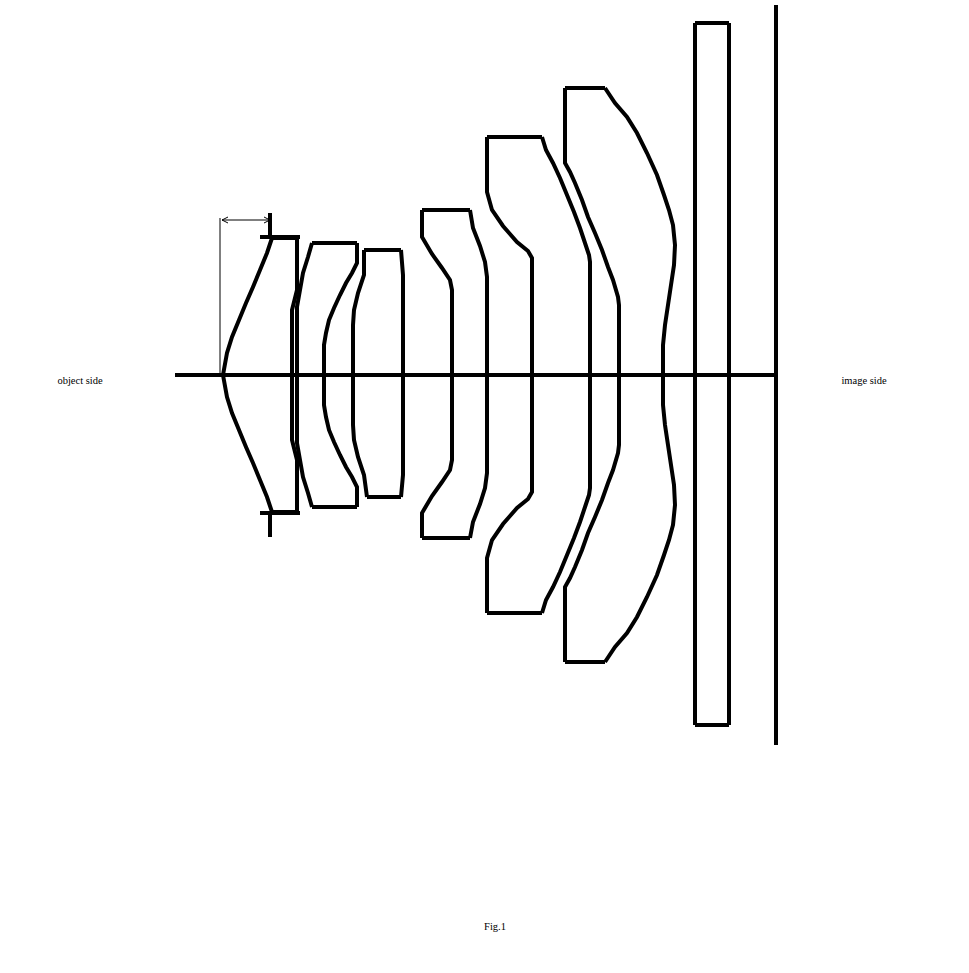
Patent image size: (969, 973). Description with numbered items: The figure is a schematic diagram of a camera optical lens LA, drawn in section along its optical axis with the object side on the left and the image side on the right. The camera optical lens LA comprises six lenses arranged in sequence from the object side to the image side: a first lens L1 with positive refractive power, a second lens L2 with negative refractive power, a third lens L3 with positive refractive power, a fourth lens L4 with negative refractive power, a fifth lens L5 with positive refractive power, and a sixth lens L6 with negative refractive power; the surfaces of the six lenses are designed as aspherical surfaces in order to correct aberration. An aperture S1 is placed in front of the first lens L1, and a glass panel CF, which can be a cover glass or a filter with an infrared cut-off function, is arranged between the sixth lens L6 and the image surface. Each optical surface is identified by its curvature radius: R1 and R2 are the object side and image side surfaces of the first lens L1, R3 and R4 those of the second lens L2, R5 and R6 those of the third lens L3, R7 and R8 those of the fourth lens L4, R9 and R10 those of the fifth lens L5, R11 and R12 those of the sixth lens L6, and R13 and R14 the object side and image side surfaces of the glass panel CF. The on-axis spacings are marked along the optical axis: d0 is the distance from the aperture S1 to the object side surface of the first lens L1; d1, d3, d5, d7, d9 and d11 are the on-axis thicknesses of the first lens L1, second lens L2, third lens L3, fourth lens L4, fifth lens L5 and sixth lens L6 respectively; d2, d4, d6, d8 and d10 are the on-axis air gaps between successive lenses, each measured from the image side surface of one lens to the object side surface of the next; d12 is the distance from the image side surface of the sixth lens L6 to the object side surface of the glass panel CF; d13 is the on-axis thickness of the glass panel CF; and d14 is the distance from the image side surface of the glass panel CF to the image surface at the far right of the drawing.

The camera optical lens LA is at (251, 83).
The aperture S1 is at (268, 210).
The first lens L1 is at (226, 375).
The second lens L2 is at (298, 412).
The third lens L3 is at (360, 443).
The fourth lens L4 is at (435, 459).
The fifth lens L5 is at (523, 436).
The sixth lens L6 is at (604, 435).
The glass panel CF is at (686, 414).
The object side surface of the first lens R1 is at (222, 379).
The image side surface of the first lens R2 is at (291, 385).
The object side surface of the second lens R3 is at (293, 412).
The image side surface of the second lens R4 is at (322, 411).
The object side surface of the third lens R5 is at (354, 415).
The image side surface of the third lens R6 is at (401, 416).
The object side surface of the fourth lens R7 is at (450, 408).
The image side surface of the fourth lens R8 is at (487, 402).
The object side surface of the fifth lens R9 is at (530, 408).
The image side surface of the fifth lens R10 is at (588, 412).
The object side surface of the sixth lens R11 is at (616, 455).
The image side surface of the sixth lens R12 is at (668, 485).
The object side surface of the optical filter R13 is at (694, 552).
The image side surface of the optical filter R14 is at (728, 583).
The on-axis distance from aperture to first lens d0 is at (245, 288).
The on-axis thickness of the first lens d1 is at (257, 366).
The on-axis distance between first and second lens d2 is at (297, 372).
The on-axis thickness of the second lens d3 is at (311, 366).
The on-axis distance between second and third lens d4 is at (338, 366).
The on-axis thickness of the third lens d5 is at (378, 366).
The on-axis distance between third and fourth lens d6 is at (427, 366).
The on-axis thickness of the fourth lens d7 is at (469, 366).
The on-axis distance between fourth and fifth lens d8 is at (509, 366).
The on-axis thickness of the fifth lens d9 is at (561, 366).
The on-axis distance between fifth and sixth lens d10 is at (591, 373).
The on-axis thickness of the sixth lens d11 is at (641, 366).
The on-axis distance between sixth lens and optical filter d12 is at (679, 366).
The on-axis thickness of the optical filter d13 is at (712, 366).
The on-axis distance from optical filter to image surface d14 is at (752, 366).